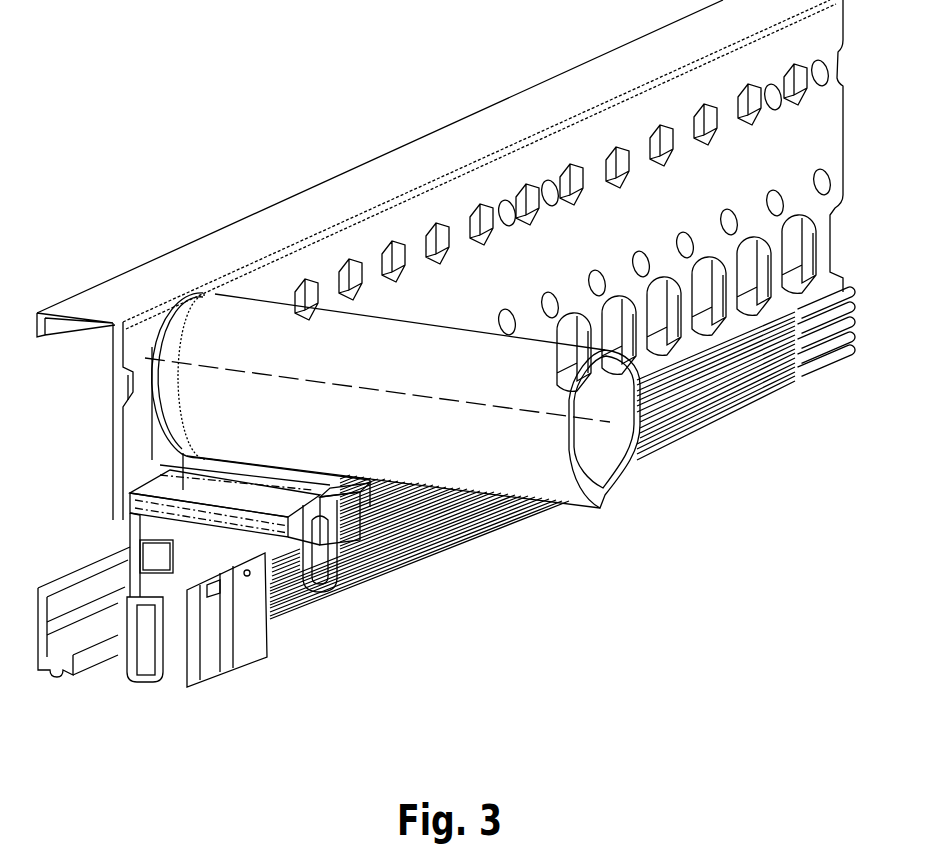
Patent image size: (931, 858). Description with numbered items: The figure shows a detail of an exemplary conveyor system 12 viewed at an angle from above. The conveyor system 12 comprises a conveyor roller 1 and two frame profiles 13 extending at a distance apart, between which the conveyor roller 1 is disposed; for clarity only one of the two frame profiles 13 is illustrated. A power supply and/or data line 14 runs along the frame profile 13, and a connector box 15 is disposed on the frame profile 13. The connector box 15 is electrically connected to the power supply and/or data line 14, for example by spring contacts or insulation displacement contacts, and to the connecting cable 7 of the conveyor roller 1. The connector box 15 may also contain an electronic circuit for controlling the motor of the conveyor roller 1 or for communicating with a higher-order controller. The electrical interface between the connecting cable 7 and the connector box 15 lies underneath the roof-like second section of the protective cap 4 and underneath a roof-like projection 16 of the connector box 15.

The conveyor system 12 is at (286, 106).
The frame profile 13 is at (566, 93).
The conveyor roller 1 is at (600, 468).
The power supply and/or data line 14 is at (740, 405).
The protective cap 4 is at (160, 454).
The roof-like projection 16 is at (366, 524).
The connecting cable 7 is at (335, 568).
The connector box 15 is at (213, 673).